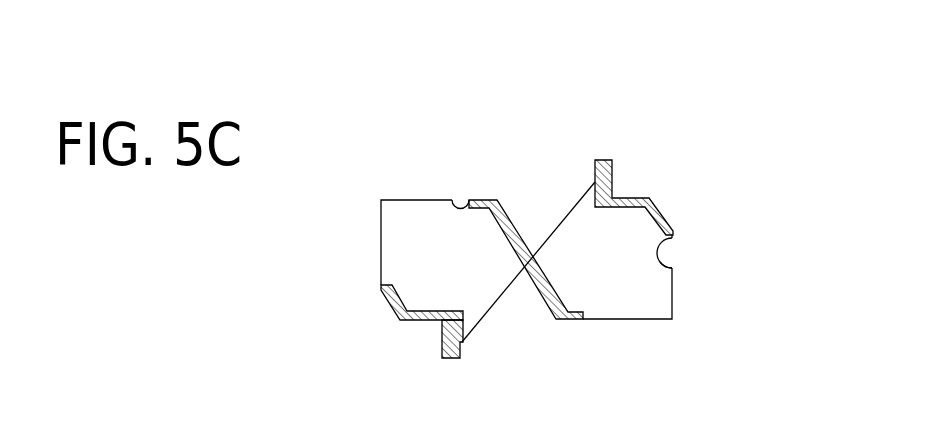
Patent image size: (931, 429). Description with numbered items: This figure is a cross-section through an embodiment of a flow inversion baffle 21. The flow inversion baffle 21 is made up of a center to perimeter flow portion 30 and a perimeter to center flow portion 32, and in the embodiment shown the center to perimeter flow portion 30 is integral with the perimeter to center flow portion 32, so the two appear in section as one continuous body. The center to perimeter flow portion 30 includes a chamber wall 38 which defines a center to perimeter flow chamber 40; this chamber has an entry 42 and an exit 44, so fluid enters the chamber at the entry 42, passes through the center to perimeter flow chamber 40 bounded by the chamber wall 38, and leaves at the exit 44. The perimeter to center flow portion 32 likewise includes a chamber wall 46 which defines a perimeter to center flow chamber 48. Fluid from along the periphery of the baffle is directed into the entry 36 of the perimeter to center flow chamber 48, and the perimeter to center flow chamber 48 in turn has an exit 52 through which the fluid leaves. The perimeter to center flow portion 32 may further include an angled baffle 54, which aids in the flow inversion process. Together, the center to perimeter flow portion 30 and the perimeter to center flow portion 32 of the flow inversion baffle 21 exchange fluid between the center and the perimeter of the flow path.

The flow inversion baffle 21 is at (662, 133).
The center to perimeter flow portion 30 is at (370, 218).
The perimeter to center flow portion 32 is at (678, 211).
The entry 36 is at (563, 222).
The chamber wall 38 is at (423, 322).
The center to perimeter flow chamber 40 is at (424, 266).
The entry 42 is at (457, 200).
The exit 44 is at (462, 342).
The chamber wall 46 is at (622, 200).
The perimeter to center flow chamber 48 is at (629, 274).
The exit 52 is at (670, 266).
The angled baffle 54 is at (667, 235).